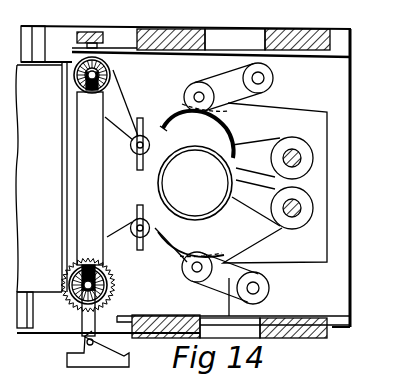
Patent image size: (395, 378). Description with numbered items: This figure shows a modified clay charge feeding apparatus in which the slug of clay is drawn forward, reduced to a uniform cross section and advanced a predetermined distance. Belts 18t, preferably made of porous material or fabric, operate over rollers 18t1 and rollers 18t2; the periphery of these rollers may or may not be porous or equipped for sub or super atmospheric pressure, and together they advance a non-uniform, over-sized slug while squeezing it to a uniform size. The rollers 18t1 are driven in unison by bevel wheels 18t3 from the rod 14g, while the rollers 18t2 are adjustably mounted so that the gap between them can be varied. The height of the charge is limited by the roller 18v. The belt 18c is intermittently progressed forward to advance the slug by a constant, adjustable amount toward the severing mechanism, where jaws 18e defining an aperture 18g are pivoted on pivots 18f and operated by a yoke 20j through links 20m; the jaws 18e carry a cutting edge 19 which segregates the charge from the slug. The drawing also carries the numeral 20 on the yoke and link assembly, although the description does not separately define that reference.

The rod 14g is at (67, 361).
The belt 18c is at (41, 195).
The jaws 18e is at (262, 120).
The pivots 18f is at (286, 165).
The aperture 18g is at (195, 183).
The belts 18t is at (129, 120).
The rollers 18t1 is at (110, 70).
The rollers 18t2 is at (150, 144).
The bevel wheels 18t3 is at (74, 78).
The roller 18v is at (90, 178).
The cutting edge 19 is at (163, 232).
The plate 20 is at (275, 184).
The yoke 20j is at (326, 134).
The links 20m is at (240, 258).